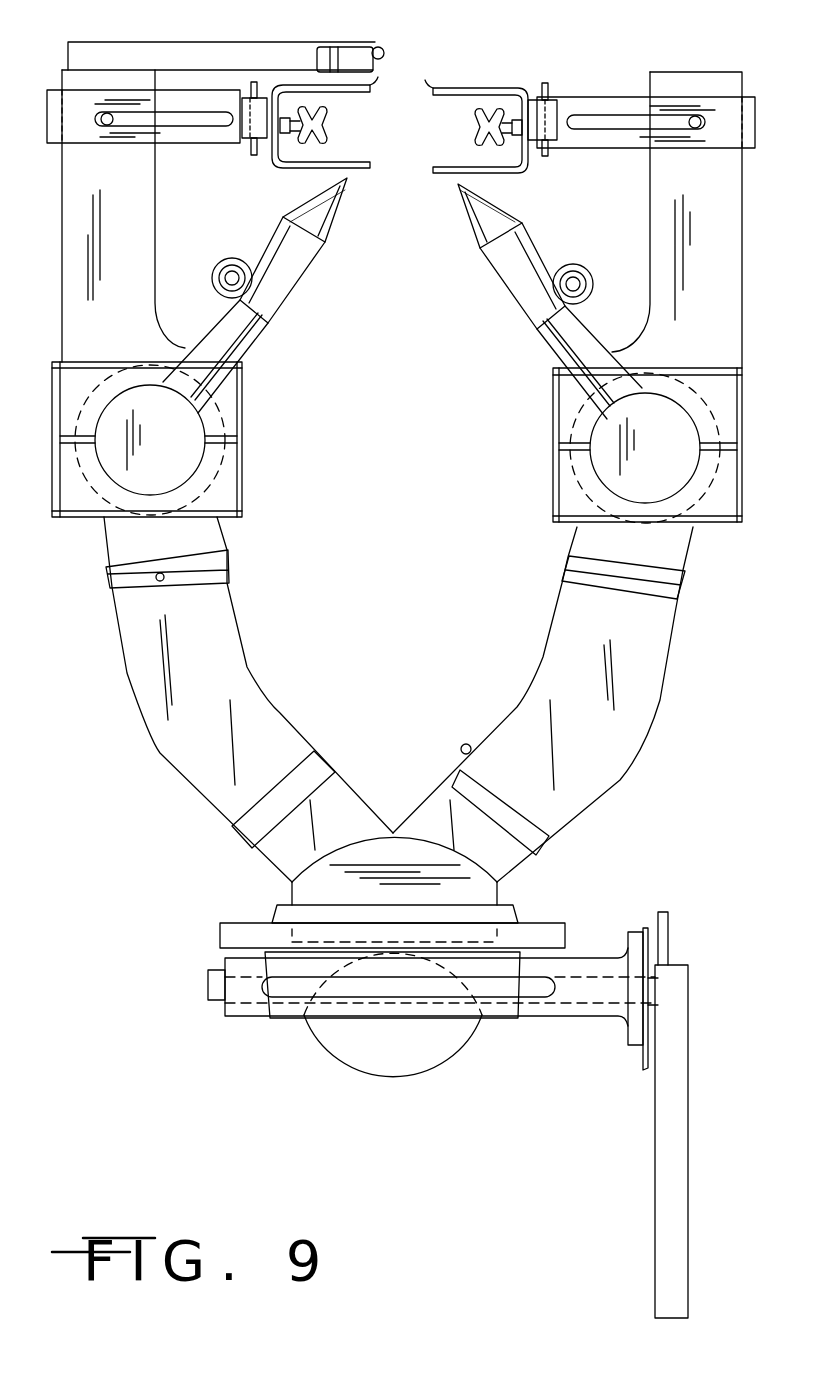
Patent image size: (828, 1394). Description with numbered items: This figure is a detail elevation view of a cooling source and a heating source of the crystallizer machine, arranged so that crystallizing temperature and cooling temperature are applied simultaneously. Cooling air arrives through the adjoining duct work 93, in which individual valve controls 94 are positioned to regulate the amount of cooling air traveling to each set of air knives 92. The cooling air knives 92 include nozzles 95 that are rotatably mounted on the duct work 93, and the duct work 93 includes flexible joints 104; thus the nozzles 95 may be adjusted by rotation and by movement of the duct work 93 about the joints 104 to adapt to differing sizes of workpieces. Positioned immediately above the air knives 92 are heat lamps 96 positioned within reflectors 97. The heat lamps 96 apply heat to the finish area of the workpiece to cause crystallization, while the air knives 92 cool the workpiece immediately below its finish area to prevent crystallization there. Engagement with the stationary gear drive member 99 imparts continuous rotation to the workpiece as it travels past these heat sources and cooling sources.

The air knives 92 is at (255, 342).
The duct work 93 is at (177, 747).
The valve controls 94 is at (590, 960).
The nozzles 95 is at (493, 277).
The heat lamps 96 is at (477, 135).
The reflectors 97 is at (295, 85).
The stationary gear drive member 99 is at (385, 50).
The flexible joints 104 is at (186, 458).